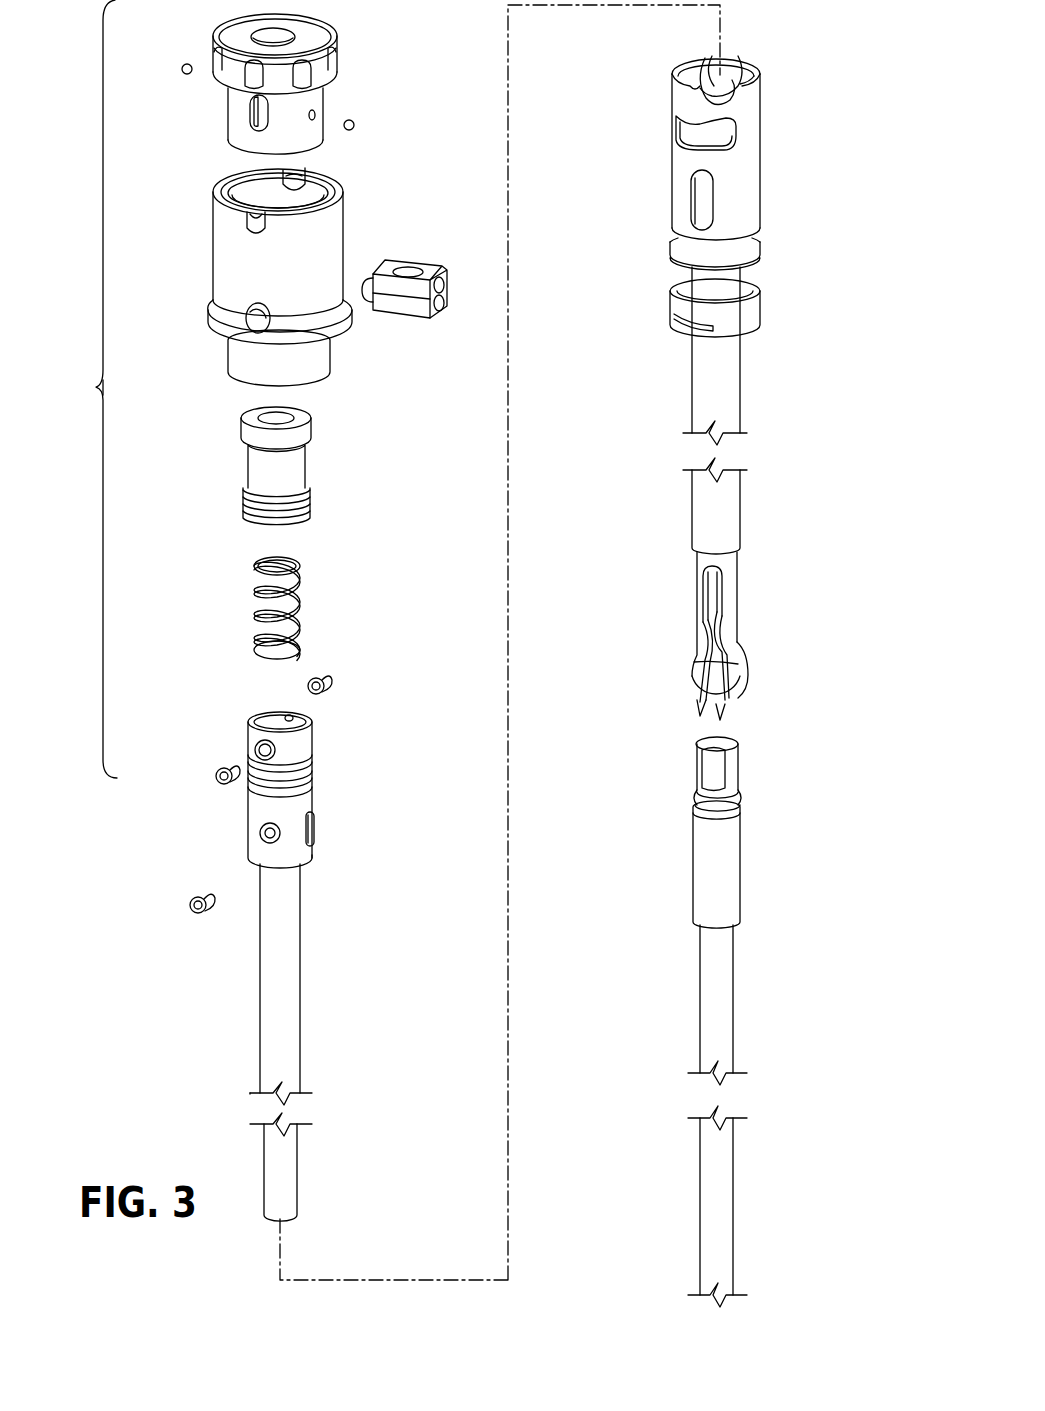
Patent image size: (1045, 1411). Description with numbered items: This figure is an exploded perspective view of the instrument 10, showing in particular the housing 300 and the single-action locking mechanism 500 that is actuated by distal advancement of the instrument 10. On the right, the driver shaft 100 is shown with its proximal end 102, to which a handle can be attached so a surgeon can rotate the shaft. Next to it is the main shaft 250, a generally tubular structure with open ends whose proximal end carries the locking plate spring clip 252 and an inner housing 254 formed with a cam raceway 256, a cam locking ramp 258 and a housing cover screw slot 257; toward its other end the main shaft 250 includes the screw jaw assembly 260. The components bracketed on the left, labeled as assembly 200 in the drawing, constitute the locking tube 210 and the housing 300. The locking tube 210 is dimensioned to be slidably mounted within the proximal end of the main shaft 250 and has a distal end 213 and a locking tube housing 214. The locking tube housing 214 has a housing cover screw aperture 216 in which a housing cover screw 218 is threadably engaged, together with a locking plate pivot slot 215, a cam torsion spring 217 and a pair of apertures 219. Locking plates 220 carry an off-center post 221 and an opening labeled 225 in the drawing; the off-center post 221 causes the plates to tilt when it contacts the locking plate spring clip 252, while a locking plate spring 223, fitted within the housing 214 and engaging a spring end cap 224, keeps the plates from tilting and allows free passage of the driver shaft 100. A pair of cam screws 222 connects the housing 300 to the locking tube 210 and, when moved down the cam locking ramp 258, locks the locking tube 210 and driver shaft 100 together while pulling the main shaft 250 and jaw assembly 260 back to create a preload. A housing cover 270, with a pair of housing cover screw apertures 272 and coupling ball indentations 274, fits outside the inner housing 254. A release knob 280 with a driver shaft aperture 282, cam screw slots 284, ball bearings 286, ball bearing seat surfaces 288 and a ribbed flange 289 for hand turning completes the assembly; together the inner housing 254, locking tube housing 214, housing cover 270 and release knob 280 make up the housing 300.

The instrument 10 is at (818, 18).
The driver shaft 100 is at (739, 1002).
The proximal end 102 is at (742, 765).
The handle assembly 200 is at (170, 1040).
The locking tube 210 is at (257, 1012).
The distal end 213 is at (262, 1216).
The locking tube housing 214 is at (315, 862).
The locking plate pivot slot 215 is at (322, 828).
The housing cover screw aperture 216 is at (262, 832).
The cam torsion spring 217 is at (321, 760).
The housing cover screw 218 is at (194, 918).
The pair of apertures 219 is at (287, 712).
The locking plates 220 is at (404, 325).
The post 221 is at (364, 286).
The cam screws 222 is at (326, 677).
The locking plate spring 223 is at (305, 585).
The spring end cap 224 is at (318, 425).
The opening 225 is at (408, 266).
The main shaft 250 is at (743, 388).
The locking plate spring clip 252 is at (762, 302).
The inner housing 254 is at (762, 130).
The cam raceway 256 is at (730, 104).
The housing cover screw slot 257 is at (688, 204).
The cam locking ramp 258 is at (716, 154).
The screw jaw assembly 260 is at (744, 598).
The housing cover 270 is at (213, 250).
The housing cover screw apertures 272 is at (248, 318).
The coupling ball indentations 274 is at (250, 232).
The release knob 280 is at (226, 98).
The driver shaft aperture 282 is at (290, 34).
The cam screw slots 284 is at (250, 112).
The ball bearings 286 is at (185, 63).
The ball bearing seat surfaces 288 is at (316, 112).
The ribbed flange 289 is at (338, 44).
The housing 300 is at (212, 12).
The locking mechanism 500 is at (65, 389).